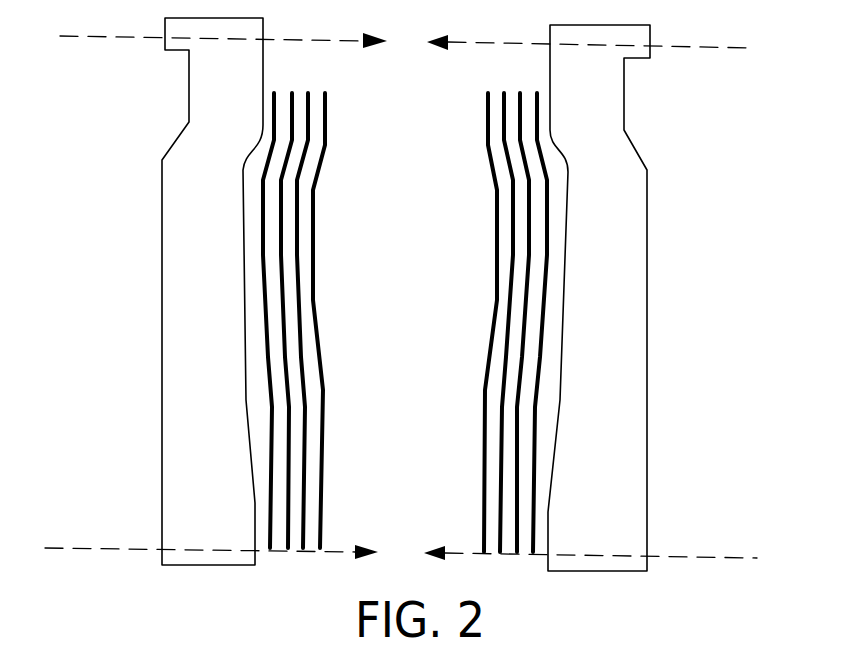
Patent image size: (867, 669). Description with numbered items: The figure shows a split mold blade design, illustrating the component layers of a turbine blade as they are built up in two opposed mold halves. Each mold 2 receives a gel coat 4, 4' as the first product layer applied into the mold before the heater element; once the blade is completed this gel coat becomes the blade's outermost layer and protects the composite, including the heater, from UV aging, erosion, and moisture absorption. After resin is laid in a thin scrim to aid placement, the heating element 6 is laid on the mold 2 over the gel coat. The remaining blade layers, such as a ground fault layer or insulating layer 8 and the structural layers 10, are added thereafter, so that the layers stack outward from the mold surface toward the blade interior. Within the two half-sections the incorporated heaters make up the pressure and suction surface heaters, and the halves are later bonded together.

The mold 2 is at (191, 335).
The gel coat 4 is at (184, 320).
The gel coat 4' is at (625, 322).
The heater element 6 is at (288, 422).
The ground fault layer or insulating layer 8 is at (300, 358).
The structural layers 10 is at (483, 382).